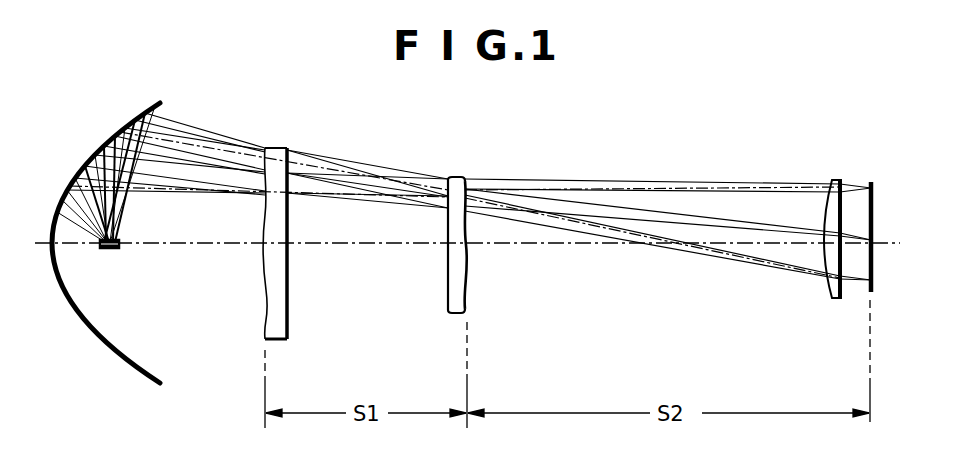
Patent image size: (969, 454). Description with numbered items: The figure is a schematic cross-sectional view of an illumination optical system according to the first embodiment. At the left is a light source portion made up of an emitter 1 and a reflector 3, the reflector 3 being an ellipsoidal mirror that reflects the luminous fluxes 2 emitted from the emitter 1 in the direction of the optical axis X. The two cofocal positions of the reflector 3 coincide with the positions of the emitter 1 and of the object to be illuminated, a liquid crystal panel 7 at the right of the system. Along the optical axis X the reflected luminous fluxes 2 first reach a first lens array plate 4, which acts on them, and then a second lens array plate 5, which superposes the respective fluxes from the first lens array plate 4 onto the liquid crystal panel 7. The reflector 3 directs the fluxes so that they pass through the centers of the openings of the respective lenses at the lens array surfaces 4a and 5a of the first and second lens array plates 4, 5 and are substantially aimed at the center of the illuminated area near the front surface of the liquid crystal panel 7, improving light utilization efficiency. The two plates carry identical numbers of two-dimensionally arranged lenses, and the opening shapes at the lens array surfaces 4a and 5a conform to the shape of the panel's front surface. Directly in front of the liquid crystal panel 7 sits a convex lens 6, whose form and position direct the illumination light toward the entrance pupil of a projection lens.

The emitter 1 is at (116, 250).
The luminous fluxes 2 is at (121, 213).
The reflector 3 is at (150, 106).
The first lens array plate 4 is at (255, 248).
The lens array surface 4a is at (265, 314).
The second lens array plate 5 is at (470, 253).
The lens array surface 5a is at (468, 301).
The convex lens 6 is at (828, 284).
The liquid crystal panel 7 is at (867, 270).
The optical axis X is at (180, 245).